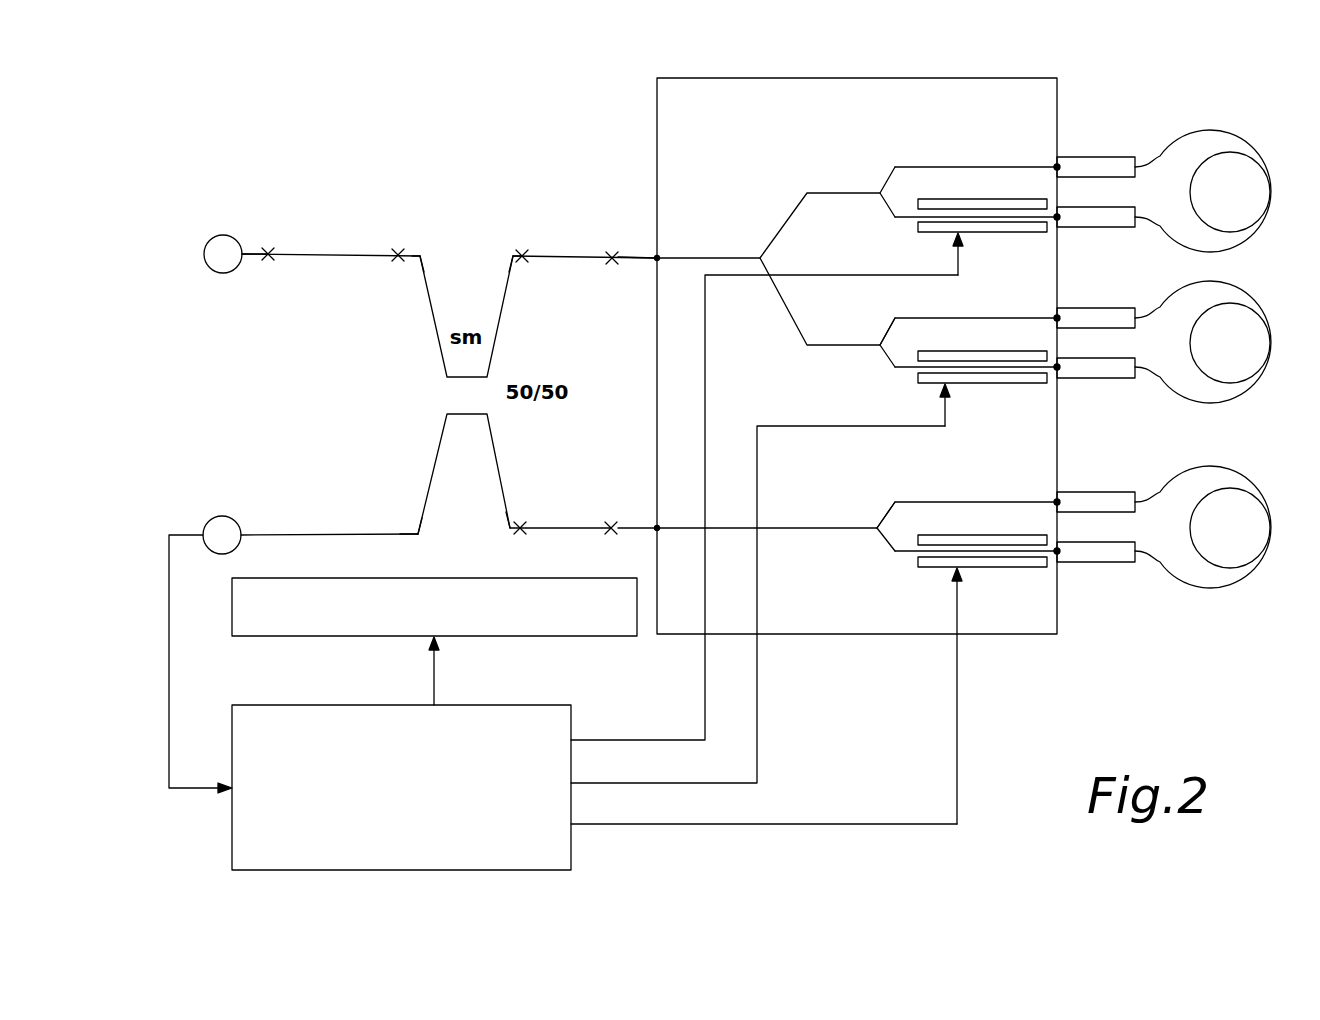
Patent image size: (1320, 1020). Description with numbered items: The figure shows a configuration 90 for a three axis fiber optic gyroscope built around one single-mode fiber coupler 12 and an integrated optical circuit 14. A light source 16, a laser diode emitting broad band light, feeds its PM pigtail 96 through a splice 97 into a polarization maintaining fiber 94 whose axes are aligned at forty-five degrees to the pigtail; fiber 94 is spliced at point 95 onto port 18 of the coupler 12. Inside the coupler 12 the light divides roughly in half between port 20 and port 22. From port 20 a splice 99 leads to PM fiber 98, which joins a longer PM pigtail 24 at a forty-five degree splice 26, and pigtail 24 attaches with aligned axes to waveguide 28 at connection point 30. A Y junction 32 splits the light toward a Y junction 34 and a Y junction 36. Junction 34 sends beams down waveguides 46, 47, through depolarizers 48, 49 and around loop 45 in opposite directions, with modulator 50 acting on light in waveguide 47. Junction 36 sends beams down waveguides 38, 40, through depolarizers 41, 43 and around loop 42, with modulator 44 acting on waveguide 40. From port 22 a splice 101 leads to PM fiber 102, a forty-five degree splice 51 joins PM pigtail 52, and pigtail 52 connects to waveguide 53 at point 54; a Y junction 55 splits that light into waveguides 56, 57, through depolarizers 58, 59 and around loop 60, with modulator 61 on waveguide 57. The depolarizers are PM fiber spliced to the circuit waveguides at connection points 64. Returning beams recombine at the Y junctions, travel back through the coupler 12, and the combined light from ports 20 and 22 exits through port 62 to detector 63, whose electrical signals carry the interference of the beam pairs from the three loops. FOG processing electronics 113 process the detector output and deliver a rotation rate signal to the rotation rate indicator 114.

The configuration 90 is at (755, 51).
The integrated optical circuit 14 is at (1040, 78).
The light source 16 is at (224, 235).
The polarization maintaining fiber 94 is at (356, 255).
The PM pigtail 96 is at (255, 256).
The splice 97 is at (268, 250).
The splice point 95 is at (399, 260).
The single-mode fiber coupler 12 is at (442, 398).
The port 18 is at (418, 256).
The port 20 is at (513, 256).
The port 62 is at (418, 534).
The port 22 is at (520, 528).
The PM fiber 98 is at (548, 257).
The splice point 99 is at (524, 261).
The splice 26 is at (612, 257).
The PM pigtail 24 is at (632, 259).
The connection point 30 is at (660, 258).
The waveguide 28 is at (718, 258).
The Y junction 32 is at (760, 257).
The Y junction 34 is at (880, 193).
The waveguide 46 is at (900, 190).
The waveguide 47 is at (888, 217).
The modulator 50 is at (980, 199).
The depolarizer 48 is at (1120, 157).
The depolarizer 49 is at (1112, 227).
The loop 45 is at (1271, 192).
The waveguide 38 is at (895, 319).
The Y junction 36 is at (880, 345).
The waveguide 40 is at (893, 367).
The modulator 44 is at (966, 351).
The depolarizer 41 is at (1118, 308).
The depolarizer 43 is at (1132, 378).
The loop 42 is at (1271, 343).
The PM pigtail 52 is at (650, 527).
The connection point 54 is at (659, 527).
The waveguide 53 is at (730, 527).
The splice 51 is at (611, 527).
The PM fiber 102 is at (535, 527).
The splice point 101 is at (520, 527).
The waveguide 56 is at (910, 502).
The Y junction 55 is at (877, 529).
The waveguide 57 is at (895, 552).
The modulator 61 is at (975, 535).
The depolarizer 58 is at (1120, 512).
The depolarizer 59 is at (1100, 563).
The loop 60 is at (1271, 528).
The connection points 64 is at (1057, 167).
The detector 63 is at (222, 516).
The indicator 114 is at (565, 578).
The FOG processing electronics 113 is at (325, 705).